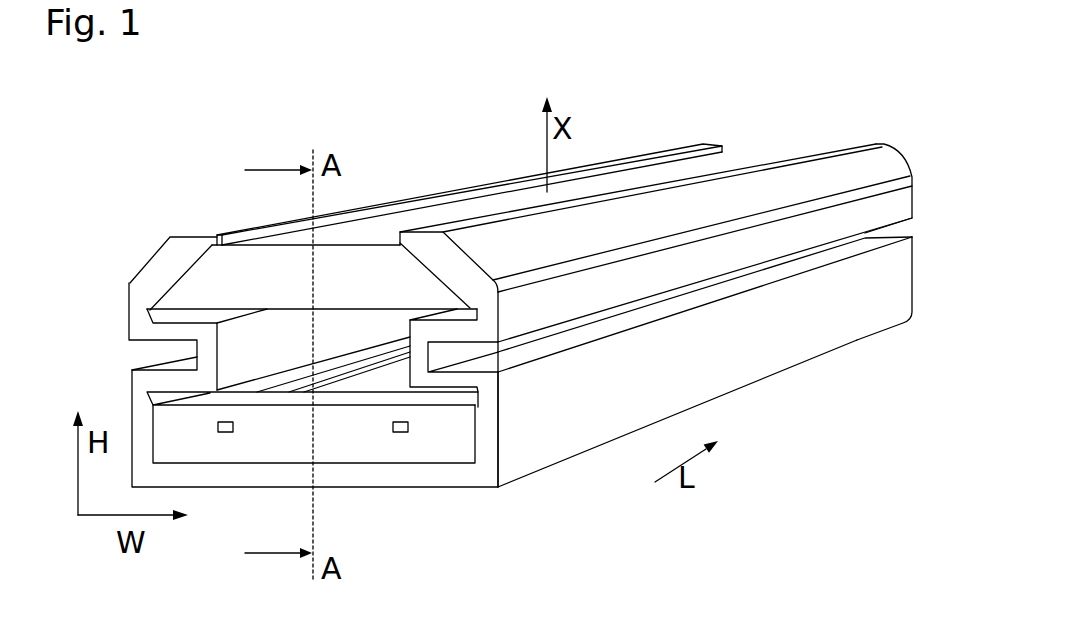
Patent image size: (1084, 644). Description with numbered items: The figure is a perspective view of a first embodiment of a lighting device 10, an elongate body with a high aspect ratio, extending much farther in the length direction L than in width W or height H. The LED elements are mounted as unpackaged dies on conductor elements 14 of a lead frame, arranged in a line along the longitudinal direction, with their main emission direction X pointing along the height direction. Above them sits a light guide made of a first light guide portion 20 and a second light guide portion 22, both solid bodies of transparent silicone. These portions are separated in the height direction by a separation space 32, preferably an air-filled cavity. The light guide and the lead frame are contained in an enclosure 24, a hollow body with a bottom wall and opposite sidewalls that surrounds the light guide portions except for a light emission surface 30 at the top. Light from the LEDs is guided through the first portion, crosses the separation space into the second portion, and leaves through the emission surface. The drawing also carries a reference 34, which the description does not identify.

The lighting device 10 is at (483, 157).
The conductor elements 14 is at (219, 432).
The first light guide portion 20 is at (428, 445).
The second light guide portion 22 is at (210, 263).
The enclosure 24 is at (762, 367).
The light emission surface 30 is at (419, 222).
The separation space 32 is at (310, 334).
The side wall 34 is at (681, 304).